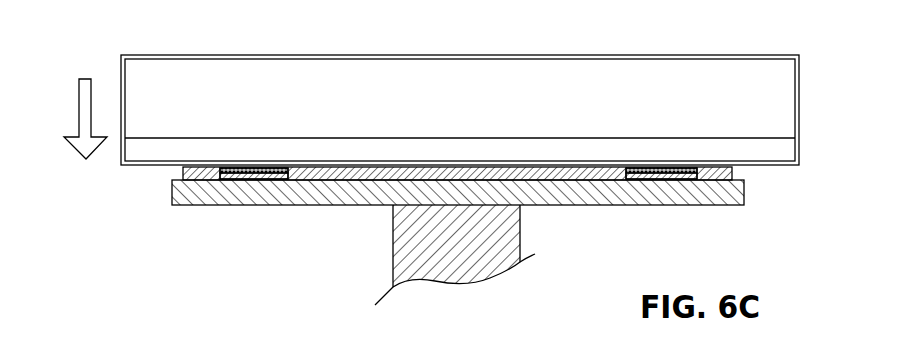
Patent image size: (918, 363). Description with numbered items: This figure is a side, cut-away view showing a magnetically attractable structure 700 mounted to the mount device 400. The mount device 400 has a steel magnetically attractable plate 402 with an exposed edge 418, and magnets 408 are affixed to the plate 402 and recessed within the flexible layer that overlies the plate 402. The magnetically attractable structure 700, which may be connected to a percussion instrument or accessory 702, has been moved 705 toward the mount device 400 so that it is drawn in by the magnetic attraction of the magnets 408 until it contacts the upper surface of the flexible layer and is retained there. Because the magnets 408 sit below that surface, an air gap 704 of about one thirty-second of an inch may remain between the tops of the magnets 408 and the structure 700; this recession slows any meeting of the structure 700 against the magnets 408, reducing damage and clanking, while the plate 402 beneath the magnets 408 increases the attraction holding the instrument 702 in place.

The mount device 400 is at (178, 236).
The magnetically attractable plate 402 is at (313, 195).
The magnets 408 is at (248, 175).
The edge 418 is at (171, 190).
The magnetically attractable structure 700 is at (773, 148).
The percussion instrument or accessory 702 is at (473, 99).
The air gap 704 is at (261, 168).
The movement of the magnetically attractable structure 705 is at (79, 97).